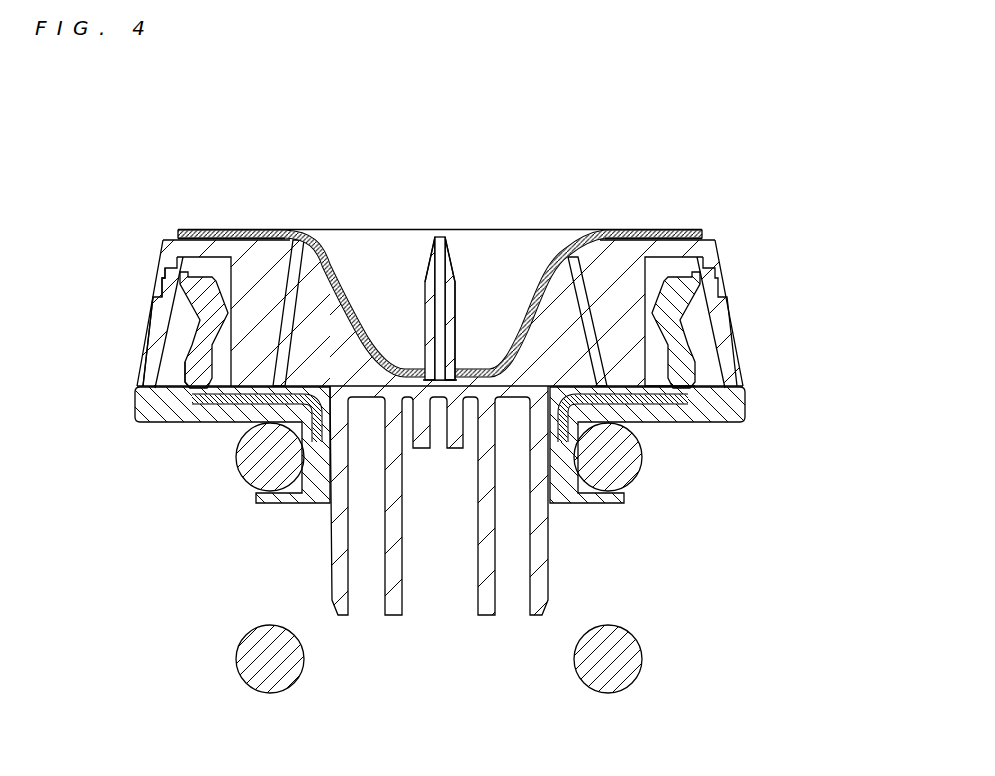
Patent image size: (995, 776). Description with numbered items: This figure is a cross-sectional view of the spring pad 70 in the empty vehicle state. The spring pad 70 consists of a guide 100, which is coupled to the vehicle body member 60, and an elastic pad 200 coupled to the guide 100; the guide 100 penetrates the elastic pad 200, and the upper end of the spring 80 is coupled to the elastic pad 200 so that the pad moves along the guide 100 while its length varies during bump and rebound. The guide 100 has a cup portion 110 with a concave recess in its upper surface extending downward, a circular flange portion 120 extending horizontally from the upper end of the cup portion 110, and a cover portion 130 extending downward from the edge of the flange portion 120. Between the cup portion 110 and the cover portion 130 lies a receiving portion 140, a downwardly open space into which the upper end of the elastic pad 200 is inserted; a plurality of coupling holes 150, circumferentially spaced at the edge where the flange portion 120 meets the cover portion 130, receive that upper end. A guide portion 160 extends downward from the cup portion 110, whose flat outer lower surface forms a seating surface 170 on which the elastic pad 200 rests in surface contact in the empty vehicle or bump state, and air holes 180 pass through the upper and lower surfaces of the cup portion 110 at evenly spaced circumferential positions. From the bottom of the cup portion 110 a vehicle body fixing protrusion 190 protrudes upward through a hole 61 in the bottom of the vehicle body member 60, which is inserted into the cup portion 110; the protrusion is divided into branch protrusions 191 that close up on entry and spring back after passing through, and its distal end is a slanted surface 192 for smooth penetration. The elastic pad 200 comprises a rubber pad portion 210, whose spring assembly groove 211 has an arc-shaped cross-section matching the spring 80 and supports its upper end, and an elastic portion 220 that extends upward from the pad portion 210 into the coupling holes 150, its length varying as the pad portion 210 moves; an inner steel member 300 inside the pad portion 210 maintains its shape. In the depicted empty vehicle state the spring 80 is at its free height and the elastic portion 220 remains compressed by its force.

The vehicle body member 60 is at (523, 315).
The hole 61 is at (423, 342).
The spring pad 70 is at (703, 222).
The spring 80 is at (613, 472).
The guide 100 is at (618, 274).
The cup portion 110 is at (558, 317).
The flange portion 120 is at (204, 245).
The cover portion 130 is at (150, 362).
The receiving portion 140 is at (187, 376).
The coupling holes 150 is at (167, 264).
The guide portion 160 is at (335, 549).
The seating surface 170 is at (592, 363).
The air holes 180 is at (283, 328).
The vehicle body fixing protrusion 190 is at (423, 322).
The branch protrusions 191 is at (452, 322).
The slanted surface 192 is at (436, 272).
The elastic pad 200 is at (130, 424).
The pad portion 210 is at (195, 415).
The spring assembly groove 211 is at (250, 480).
The elastic portion 220 is at (155, 344).
The inner steel member 300 is at (663, 404).